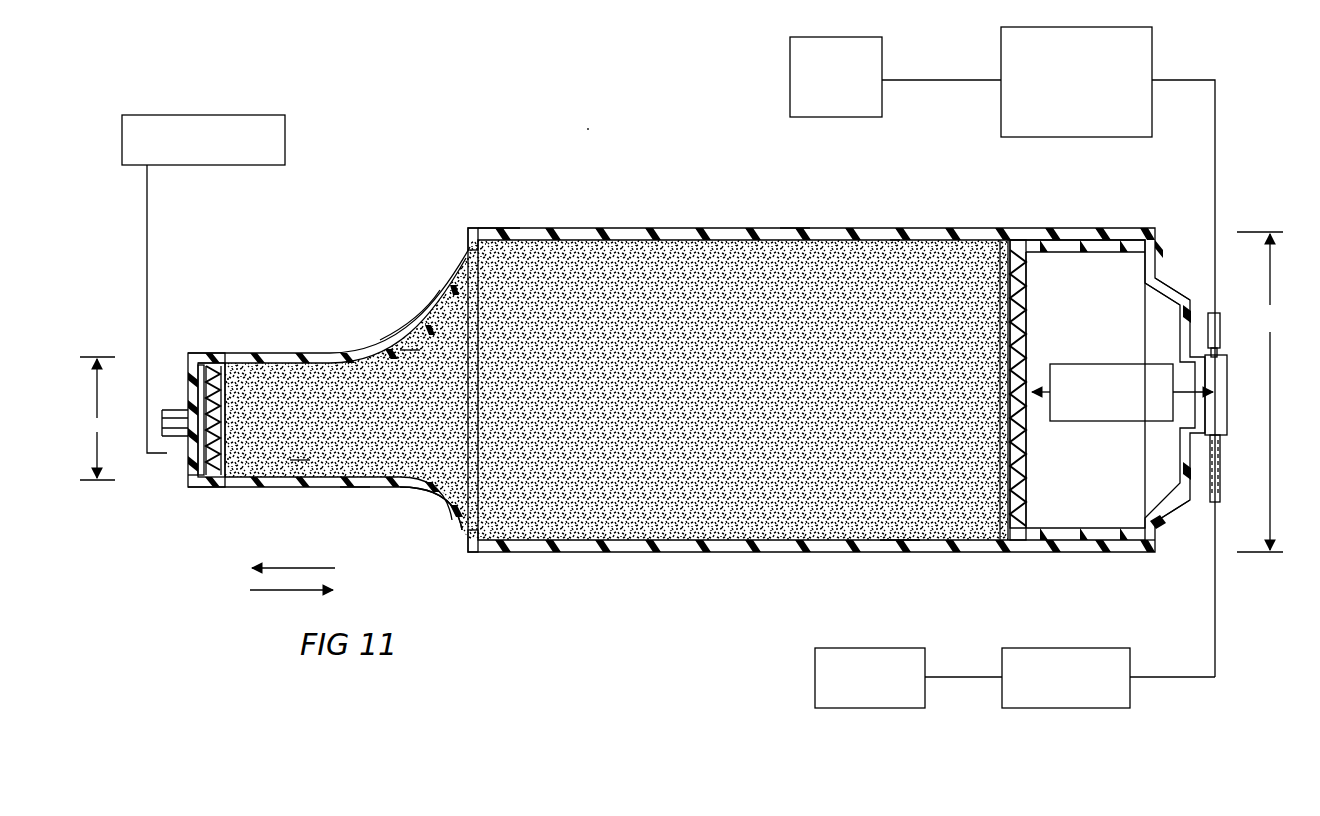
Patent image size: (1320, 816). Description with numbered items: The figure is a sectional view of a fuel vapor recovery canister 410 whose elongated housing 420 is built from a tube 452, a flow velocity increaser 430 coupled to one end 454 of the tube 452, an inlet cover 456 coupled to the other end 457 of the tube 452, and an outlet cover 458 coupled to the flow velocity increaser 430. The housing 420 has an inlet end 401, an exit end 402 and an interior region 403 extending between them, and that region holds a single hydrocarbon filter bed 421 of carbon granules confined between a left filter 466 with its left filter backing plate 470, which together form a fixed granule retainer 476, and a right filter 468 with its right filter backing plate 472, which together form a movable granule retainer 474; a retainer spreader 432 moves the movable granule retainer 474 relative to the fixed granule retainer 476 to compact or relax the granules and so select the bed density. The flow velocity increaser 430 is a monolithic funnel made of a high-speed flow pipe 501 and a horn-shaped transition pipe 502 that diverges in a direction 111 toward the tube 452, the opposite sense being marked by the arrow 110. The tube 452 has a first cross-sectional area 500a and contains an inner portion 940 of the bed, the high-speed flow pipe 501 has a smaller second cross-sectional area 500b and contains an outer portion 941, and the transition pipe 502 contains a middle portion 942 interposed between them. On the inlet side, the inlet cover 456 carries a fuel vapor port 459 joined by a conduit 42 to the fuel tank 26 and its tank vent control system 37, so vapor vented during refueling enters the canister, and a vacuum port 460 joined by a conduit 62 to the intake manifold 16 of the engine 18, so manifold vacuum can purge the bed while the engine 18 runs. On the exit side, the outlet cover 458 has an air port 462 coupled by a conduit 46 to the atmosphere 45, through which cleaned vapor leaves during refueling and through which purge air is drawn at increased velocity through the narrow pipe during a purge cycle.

The fuel vapor recovery canister 410 is at (588, 118).
The atmosphere 45 is at (233, 115).
The conduit 46 is at (149, 260).
The elongated housing 420 is at (462, 226).
The one end of tube 454 is at (496, 230).
The tube 452 is at (606, 224).
The hydrocarbon filter bed 421 is at (798, 232).
The interior region 403 is at (893, 246).
The movable granule retainer 474 is at (1017, 226).
The inlet end 401 is at (1108, 236).
The fuel tank 26 is at (850, 48).
The tank vent control system 37 is at (1003, 40).
The conduit 42 is at (1214, 175).
The first cross-sectional area 500a is at (1264, 392).
The fuel vapor port 459 is at (1217, 312).
The retainer spreader 432 is at (1088, 364).
The inlet cover 456 is at (1178, 520).
The vacuum port 460 is at (1220, 488).
The another end of tube 457 is at (1136, 554).
The right filter backing plate 472 is at (1020, 555).
The right filter 468 is at (1000, 552).
The inner portion of hydrocarbon filter bed 940 is at (896, 554).
The flow velocity increaser 430 is at (400, 500).
The purge flow direction 110 is at (305, 568).
The direction 111 is at (285, 591).
The outer portion of hydrocarbon filter bed 941 is at (300, 458).
The left filter backing plate 470 is at (221, 478).
The left filter 466 is at (219, 474).
The outlet cover 458 is at (184, 490).
The air port 462 is at (166, 440).
The exit end 402 is at (190, 380).
The fixed granule retainer 476 is at (214, 348).
The high-speed flow pipe 501 is at (268, 356).
The horn-shaped transition pipe 502 is at (418, 310).
The middle portion of hydrocarbon filter bed 942 is at (411, 350).
The second cross-sectional area 500b is at (99, 418).
The engine 18 is at (816, 672).
The intake manifold 16 is at (1057, 648).
The conduit 62 is at (1182, 679).